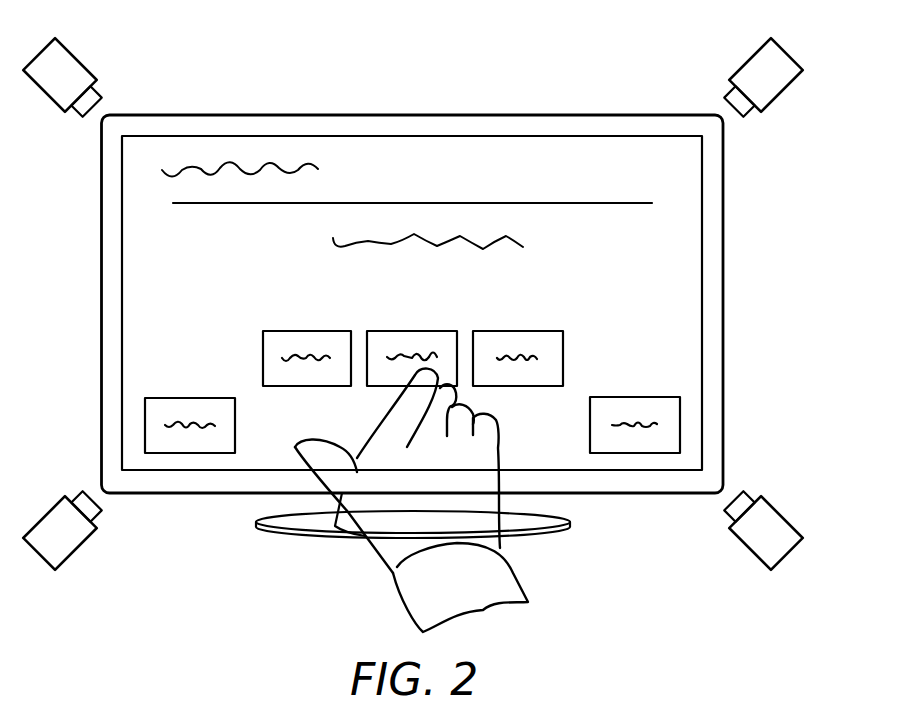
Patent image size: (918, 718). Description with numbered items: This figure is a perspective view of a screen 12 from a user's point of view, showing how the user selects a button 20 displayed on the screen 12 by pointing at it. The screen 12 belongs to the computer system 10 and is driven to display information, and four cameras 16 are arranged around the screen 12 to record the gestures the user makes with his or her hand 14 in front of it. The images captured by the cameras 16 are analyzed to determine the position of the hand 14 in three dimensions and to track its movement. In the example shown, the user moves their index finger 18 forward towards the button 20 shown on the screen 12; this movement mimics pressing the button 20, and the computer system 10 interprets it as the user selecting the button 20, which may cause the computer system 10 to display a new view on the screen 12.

The computer system 10 is at (748, 175).
The screen 12 is at (112, 212).
The hand 14 is at (488, 523).
The cameras 16 is at (68, 50).
The index finger 18 is at (388, 399).
The button 20 is at (412, 331).